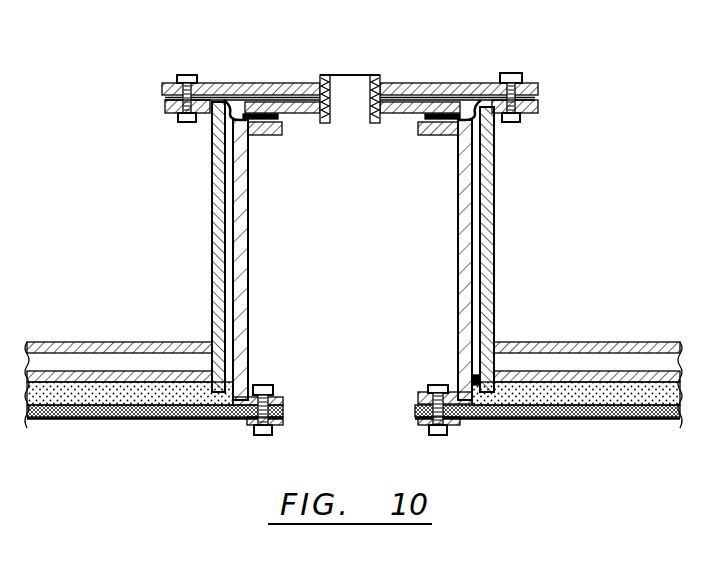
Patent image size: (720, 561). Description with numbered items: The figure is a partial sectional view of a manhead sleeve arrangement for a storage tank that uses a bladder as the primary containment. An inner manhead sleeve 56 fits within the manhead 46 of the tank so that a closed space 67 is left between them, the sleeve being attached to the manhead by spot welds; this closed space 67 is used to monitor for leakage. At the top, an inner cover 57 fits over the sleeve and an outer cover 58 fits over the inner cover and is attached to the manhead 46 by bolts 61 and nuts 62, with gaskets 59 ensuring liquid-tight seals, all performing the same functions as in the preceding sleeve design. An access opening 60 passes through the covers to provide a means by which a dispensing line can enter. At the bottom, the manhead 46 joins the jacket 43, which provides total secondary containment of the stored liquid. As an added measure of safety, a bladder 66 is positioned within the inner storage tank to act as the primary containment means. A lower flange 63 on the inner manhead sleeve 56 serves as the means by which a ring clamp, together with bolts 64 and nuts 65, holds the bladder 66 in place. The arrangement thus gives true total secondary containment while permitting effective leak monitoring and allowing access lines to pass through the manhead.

The jacket 43 is at (600, 342).
The manhead 46 is at (494, 204).
The inner manhead sleeve 56 is at (248, 212).
The inner cover 57 is at (310, 113).
The outer cover 58 is at (279, 83).
The gaskets 59 is at (228, 96).
The access opening 60 is at (326, 74).
The bolts 61 is at (522, 78).
The nuts 62 is at (525, 118).
The lower flange 63 is at (415, 392).
The bolts 64 is at (435, 384).
The nuts 65 is at (454, 431).
The bladder 66 is at (602, 420).
The closed space 67 is at (473, 267).